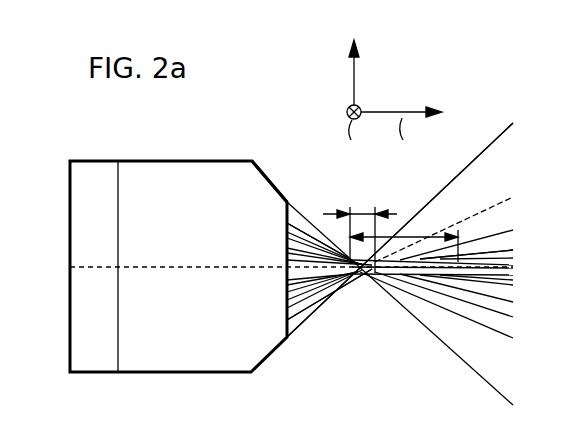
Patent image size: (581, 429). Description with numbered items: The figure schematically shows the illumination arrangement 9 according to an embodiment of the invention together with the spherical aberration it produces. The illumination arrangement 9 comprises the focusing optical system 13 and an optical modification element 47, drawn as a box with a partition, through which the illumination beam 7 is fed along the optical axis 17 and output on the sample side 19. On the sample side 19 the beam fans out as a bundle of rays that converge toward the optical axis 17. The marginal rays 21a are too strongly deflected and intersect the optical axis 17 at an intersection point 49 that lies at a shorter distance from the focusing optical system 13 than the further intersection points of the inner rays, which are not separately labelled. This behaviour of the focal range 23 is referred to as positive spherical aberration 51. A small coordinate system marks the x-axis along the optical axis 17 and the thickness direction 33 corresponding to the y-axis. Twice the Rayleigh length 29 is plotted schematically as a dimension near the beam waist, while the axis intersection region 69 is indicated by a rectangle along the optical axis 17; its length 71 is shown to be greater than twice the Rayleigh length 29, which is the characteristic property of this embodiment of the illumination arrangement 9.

The focusing optical system 13 is at (214, 232).
The optical modification element 47 is at (106, 232).
The optical axis 17 is at (213, 268).
The illumination arrangement 9 is at (262, 161).
The illumination beam 7 is at (298, 198).
The sample side 19 is at (320, 178).
The marginal rays 21a is at (310, 218).
The intersection point 49 is at (357, 283).
The focal range 23 is at (403, 332).
The positive spherical aberration 51 is at (400, 230).
The thickness direction 33 is at (354, 84).
The Rayleigh length 29 is at (398, 212).
The length of the axis intersection region 71 is at (427, 237).
The axis intersection region 69 is at (463, 258).